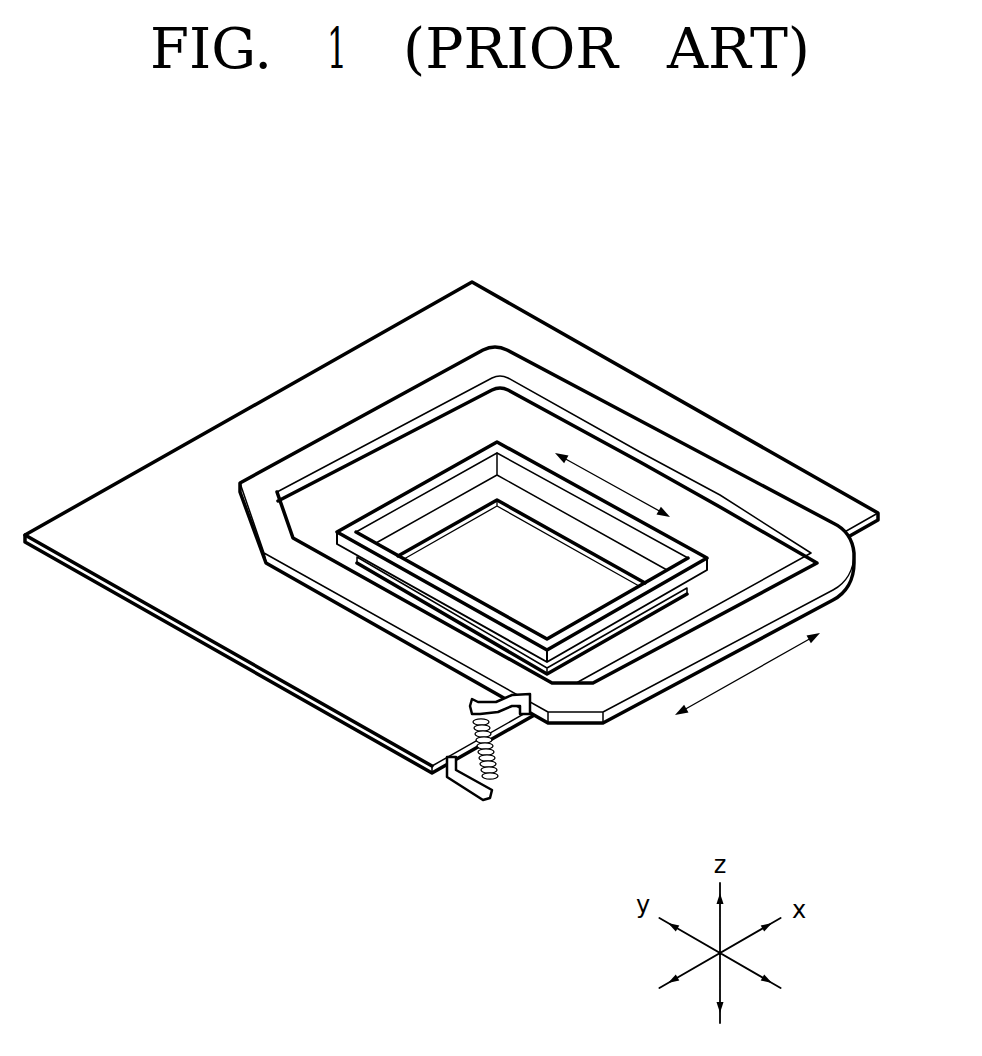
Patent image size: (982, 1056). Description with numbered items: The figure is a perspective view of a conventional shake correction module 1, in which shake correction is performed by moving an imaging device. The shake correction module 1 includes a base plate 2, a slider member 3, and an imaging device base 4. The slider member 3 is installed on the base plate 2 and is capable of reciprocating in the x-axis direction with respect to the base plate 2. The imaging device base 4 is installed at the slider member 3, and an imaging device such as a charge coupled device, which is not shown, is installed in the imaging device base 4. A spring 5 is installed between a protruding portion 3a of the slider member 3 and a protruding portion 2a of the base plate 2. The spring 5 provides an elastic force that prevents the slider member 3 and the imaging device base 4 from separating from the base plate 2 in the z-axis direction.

The shake correction module 1 is at (451, 572).
The base plate 2 is at (340, 380).
The protruding portion of the base plate 2a is at (463, 788).
The slider member 3 is at (627, 427).
The protruding portion of the slider member 3a is at (472, 712).
The imaging device base 4 is at (512, 452).
The spring 5 is at (492, 758).